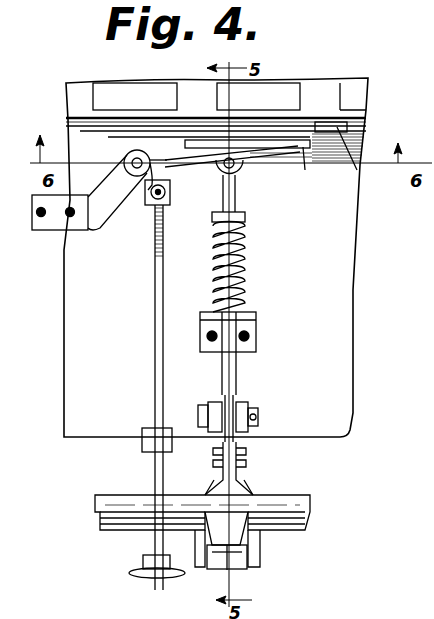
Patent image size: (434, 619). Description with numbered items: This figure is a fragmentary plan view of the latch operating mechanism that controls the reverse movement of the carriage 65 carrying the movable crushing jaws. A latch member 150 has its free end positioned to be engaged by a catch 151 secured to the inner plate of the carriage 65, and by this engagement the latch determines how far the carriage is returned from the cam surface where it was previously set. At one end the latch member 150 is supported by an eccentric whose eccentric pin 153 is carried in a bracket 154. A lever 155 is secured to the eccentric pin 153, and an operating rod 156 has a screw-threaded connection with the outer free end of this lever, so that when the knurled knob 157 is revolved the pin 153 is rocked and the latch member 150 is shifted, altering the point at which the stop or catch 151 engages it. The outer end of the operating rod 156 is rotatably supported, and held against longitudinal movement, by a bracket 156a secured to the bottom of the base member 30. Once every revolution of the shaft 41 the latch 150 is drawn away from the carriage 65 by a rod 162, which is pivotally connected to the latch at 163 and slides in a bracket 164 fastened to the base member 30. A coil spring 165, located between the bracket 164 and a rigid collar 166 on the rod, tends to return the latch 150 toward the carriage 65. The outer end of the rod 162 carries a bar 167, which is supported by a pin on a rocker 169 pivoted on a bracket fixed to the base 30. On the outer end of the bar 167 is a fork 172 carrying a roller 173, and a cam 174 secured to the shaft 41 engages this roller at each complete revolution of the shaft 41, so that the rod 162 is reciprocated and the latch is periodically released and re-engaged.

The base member 30 is at (340, 348).
The shaft 41 is at (292, 533).
The carriage 65 is at (340, 78).
The latch member 150 is at (318, 133).
The catch 151 is at (357, 170).
The eccentric pin 153 is at (137, 176).
The bracket 154 is at (100, 220).
The lever 155 is at (170, 195).
The operating rod 156 is at (155, 290).
The bracket 156a is at (142, 445).
The knurled knob 157 is at (129, 572).
The rod 162 is at (236, 200).
The pivot connection 163 is at (243, 172).
The bracket 164 is at (256, 322).
The coil spring 165 is at (246, 258).
The rigid collar 166 is at (246, 217).
The bar 167 is at (222, 396).
The rocker 169 is at (254, 400).
The fork 172 is at (258, 490).
The roller 173 is at (238, 570).
The cam 174 is at (212, 576).